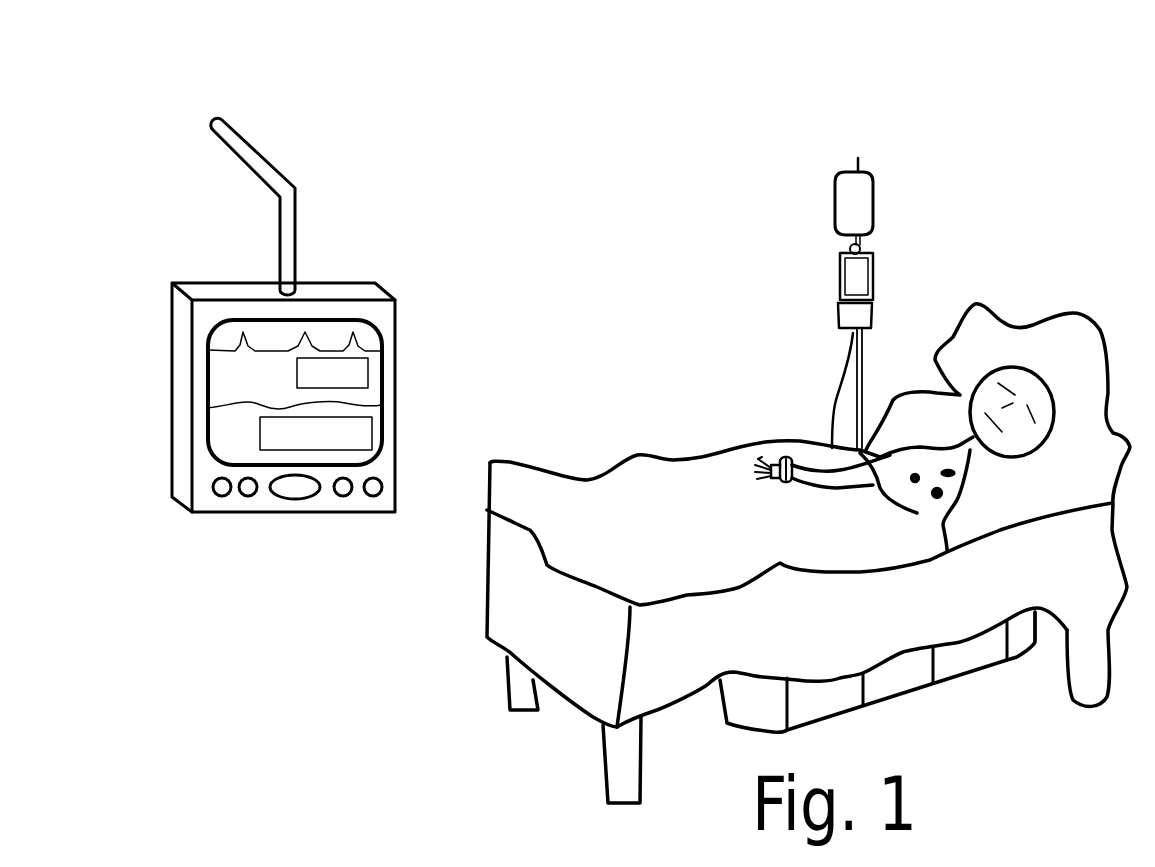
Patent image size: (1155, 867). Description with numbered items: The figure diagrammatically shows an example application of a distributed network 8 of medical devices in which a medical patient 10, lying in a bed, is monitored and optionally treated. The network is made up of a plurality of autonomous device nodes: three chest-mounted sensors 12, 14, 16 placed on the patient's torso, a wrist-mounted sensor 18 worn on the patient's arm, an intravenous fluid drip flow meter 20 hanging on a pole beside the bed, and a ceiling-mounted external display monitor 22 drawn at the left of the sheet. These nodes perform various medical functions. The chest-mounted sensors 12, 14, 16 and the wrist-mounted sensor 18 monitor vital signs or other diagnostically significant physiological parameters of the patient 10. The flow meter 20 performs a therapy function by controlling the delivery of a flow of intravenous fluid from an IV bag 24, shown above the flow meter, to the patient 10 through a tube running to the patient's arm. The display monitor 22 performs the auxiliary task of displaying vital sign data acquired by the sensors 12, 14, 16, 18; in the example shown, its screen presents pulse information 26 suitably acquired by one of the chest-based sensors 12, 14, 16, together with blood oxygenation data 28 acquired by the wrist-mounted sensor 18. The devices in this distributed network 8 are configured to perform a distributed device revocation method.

The distributed network 8 is at (1067, 167).
The medical patient 10 is at (1018, 377).
The chest-mounted sensor 12 is at (955, 475).
The chest-mounted sensor 14 is at (933, 497).
The chest-mounted sensor 16 is at (912, 481).
The wrist-mounted sensor 18 is at (787, 456).
The intravenous (IV) fluid drip flow meter 20 is at (848, 280).
The ceiling-mounted external display monitor 22 is at (178, 365).
The IV bag 24 is at (848, 202).
The pulse information 26 is at (250, 369).
The blood oxygenation (SpO2) data 28 is at (244, 427).